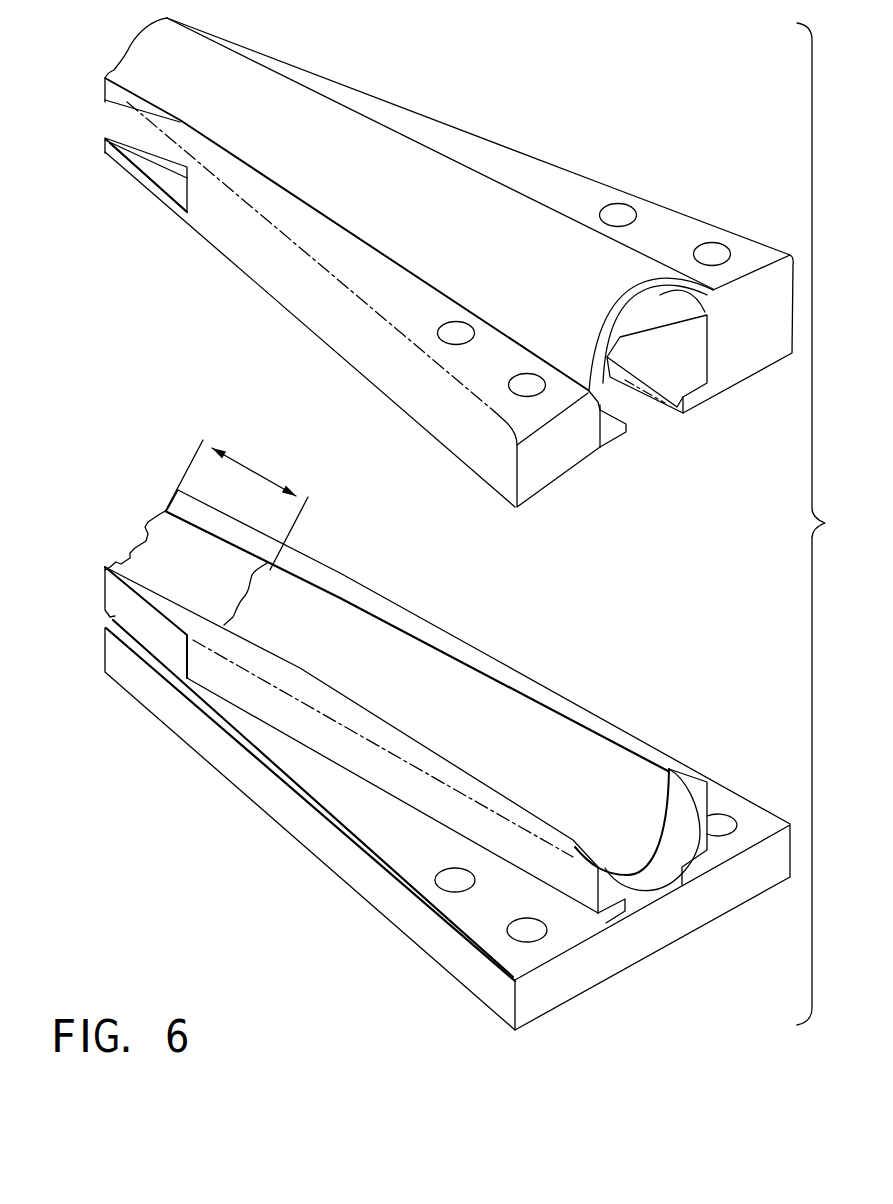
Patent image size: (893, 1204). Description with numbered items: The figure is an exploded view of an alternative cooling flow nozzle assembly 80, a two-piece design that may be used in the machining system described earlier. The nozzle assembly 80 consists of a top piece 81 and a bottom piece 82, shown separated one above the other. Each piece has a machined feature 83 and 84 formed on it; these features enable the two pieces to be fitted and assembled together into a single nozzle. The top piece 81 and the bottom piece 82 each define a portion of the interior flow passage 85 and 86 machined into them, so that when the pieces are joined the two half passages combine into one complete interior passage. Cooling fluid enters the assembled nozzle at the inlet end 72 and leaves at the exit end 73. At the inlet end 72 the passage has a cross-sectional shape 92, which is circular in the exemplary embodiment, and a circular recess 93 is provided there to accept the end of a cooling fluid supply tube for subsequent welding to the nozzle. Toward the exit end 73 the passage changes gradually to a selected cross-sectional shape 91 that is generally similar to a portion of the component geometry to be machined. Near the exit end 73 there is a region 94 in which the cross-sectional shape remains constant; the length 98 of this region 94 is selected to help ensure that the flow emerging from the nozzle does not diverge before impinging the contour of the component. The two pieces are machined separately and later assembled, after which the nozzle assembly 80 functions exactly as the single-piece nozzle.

The cooling flow nozzle assembly 80 is at (118, 356).
The top piece 81 is at (470, 133).
The bottom piece 82 is at (324, 855).
The feature 83 is at (607, 453).
The feature 84 is at (610, 918).
The portion of interior flow passage 85 is at (697, 338).
The portion of interior flow passage 86 is at (572, 743).
The inlet end 72 is at (688, 900).
The exit end 73 is at (103, 657).
The cross-sectional shape 91 is at (142, 523).
The cross-sectional shape 92 is at (638, 840).
The circular recess 93 is at (688, 797).
The region 94 is at (196, 522).
The length 98 is at (257, 470).